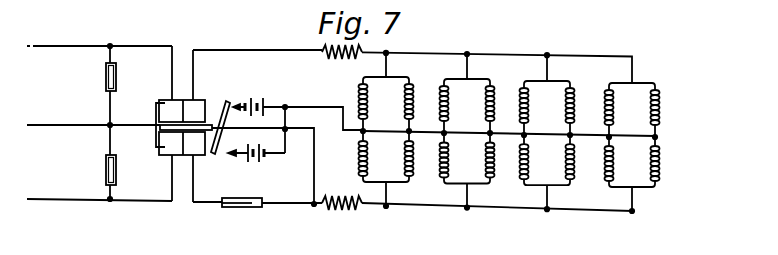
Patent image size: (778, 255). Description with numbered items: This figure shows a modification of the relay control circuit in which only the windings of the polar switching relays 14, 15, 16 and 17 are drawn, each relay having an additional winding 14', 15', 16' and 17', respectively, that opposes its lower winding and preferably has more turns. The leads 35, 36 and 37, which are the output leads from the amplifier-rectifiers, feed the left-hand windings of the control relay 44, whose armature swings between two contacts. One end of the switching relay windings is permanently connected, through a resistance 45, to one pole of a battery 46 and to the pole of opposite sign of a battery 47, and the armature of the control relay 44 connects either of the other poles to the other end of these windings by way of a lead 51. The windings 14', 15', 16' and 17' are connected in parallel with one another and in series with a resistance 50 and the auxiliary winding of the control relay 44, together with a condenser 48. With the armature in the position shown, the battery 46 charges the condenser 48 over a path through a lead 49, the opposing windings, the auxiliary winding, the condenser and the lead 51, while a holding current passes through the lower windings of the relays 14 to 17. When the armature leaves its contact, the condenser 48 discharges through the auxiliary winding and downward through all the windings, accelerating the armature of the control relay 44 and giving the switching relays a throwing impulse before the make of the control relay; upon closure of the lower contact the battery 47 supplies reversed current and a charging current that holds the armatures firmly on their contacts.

The switching relay 14 is at (386, 156).
The opposing winding of switching relay 14 14' is at (386, 105).
The switching relay 15 is at (467, 158).
The opposing winding of switching relay 15 15' is at (467, 107).
The switching relay 16 is at (547, 159).
The opposing winding of switching relay 16 16' is at (547, 109).
The switching relay 17 is at (632, 161).
The opposing winding of switching relay 17 17' is at (632, 111).
The lead 35 is at (82, 45).
The lead 36 is at (82, 124).
The lead 37 is at (80, 198).
The control relay 44 is at (227, 103).
The resistance 45 is at (356, 209).
The battery 46 is at (264, 101).
The battery 47 is at (257, 159).
The condenser 48 is at (244, 198).
The lead 49 is at (319, 108).
The resistance 50 is at (320, 59).
The lead 51 is at (317, 163).